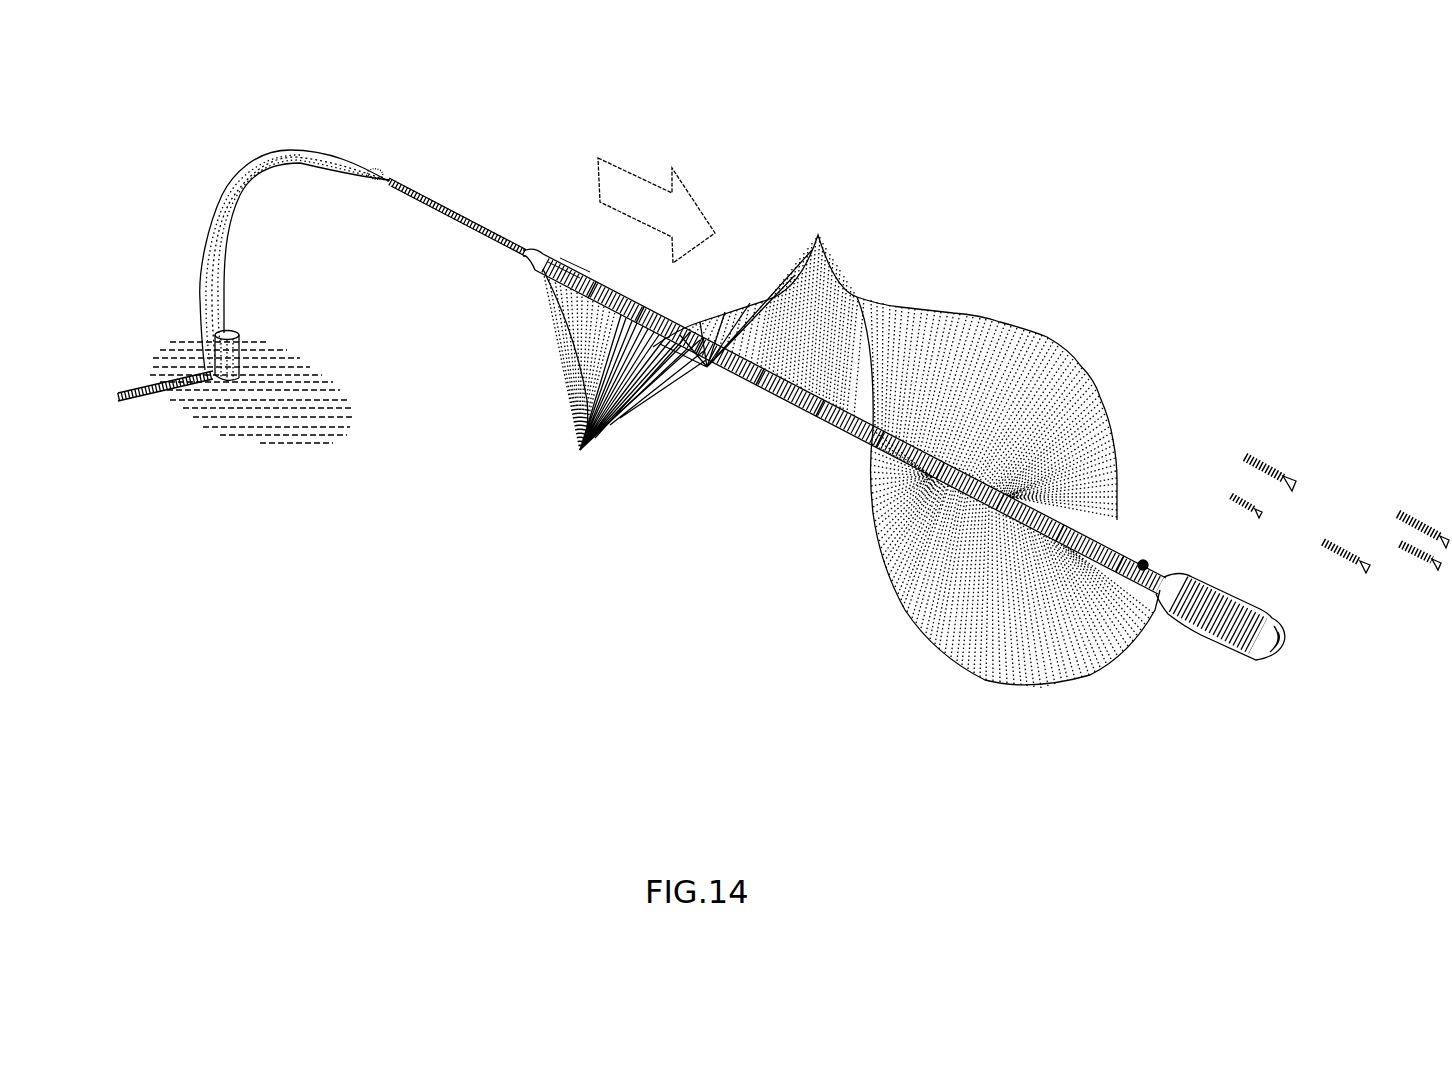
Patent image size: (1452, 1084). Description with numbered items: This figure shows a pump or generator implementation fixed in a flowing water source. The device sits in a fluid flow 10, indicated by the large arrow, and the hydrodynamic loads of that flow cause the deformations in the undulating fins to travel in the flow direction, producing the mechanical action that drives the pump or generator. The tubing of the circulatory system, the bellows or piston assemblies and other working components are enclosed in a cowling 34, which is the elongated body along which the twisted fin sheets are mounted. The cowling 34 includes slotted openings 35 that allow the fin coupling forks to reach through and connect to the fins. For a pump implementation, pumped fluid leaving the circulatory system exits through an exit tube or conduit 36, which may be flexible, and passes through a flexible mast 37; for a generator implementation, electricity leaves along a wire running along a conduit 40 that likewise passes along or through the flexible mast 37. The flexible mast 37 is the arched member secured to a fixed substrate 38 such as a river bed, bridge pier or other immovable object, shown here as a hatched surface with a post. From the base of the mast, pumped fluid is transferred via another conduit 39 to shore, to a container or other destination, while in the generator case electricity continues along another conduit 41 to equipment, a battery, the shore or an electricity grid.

The fluid flow 10 is at (635, 180).
The cowling 34 is at (1147, 562).
The slotted openings 35 is at (808, 421).
The exit tube or conduit 36 is at (462, 196).
The conduit 40 is at (418, 182).
The flexible mast 37 is at (296, 141).
The fixed substrate 38 is at (307, 379).
The conduit 39 is at (181, 427).
The conduit 41 is at (149, 409).